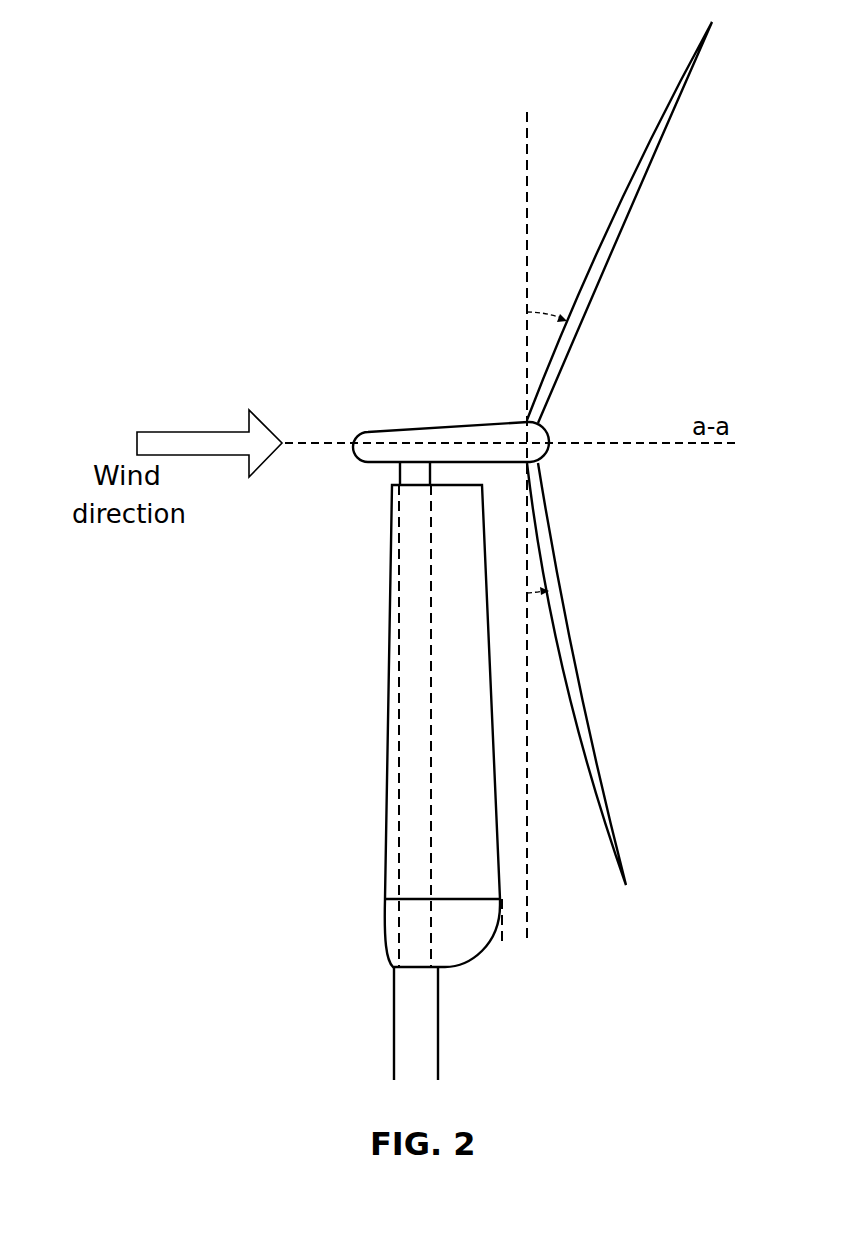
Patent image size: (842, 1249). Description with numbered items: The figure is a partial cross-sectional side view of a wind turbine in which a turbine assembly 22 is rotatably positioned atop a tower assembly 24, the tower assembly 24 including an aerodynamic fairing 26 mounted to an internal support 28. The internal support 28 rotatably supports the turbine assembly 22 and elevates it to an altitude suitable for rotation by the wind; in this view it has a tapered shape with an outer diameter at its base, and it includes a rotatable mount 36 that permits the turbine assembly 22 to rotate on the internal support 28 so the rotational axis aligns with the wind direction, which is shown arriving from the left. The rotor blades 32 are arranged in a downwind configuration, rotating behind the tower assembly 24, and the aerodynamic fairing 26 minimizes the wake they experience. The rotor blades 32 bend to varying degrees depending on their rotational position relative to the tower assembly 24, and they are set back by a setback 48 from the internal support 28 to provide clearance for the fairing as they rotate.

The turbine assembly 22 is at (398, 403).
The tower assembly 24 is at (364, 947).
The aerodynamic fairing 26 is at (480, 863).
The internal support 28 is at (398, 700).
The rotor blade 32 is at (686, 68).
The rotatable mount 36 is at (392, 486).
The setback 48 is at (527, 960).